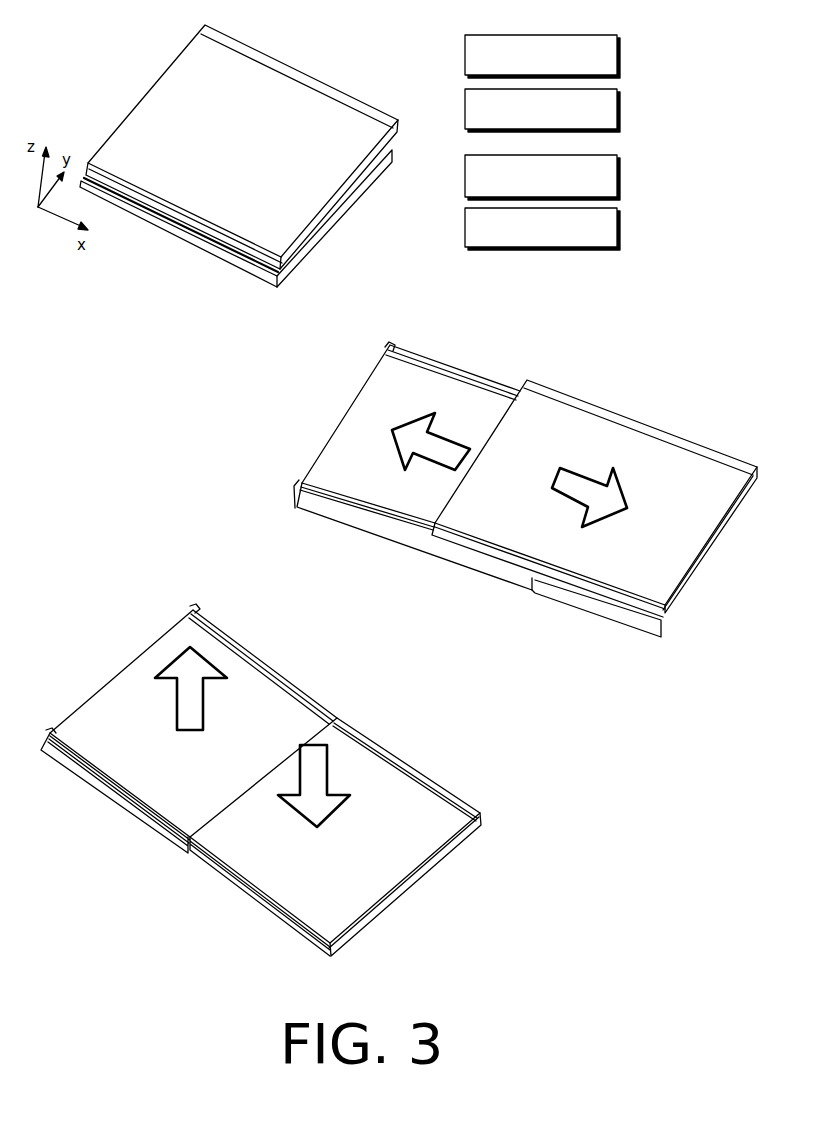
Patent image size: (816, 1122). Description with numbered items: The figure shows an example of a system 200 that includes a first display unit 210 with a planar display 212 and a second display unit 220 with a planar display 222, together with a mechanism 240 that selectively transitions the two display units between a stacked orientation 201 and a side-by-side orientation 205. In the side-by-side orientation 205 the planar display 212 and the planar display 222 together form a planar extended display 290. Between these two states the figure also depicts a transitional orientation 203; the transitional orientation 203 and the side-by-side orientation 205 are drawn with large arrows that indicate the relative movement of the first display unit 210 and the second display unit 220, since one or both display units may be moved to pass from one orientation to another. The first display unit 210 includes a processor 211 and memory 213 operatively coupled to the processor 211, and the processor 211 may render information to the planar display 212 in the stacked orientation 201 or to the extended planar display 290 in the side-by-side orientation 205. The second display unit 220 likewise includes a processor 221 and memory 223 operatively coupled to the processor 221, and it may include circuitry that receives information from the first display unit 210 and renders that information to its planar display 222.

The system 200 is at (121, 44).
The stacked orientation 201 is at (340, 33).
The transitional orientation 203 is at (612, 368).
The side-by-side orientation 205 is at (112, 611).
The first display unit 210 is at (421, 490).
The processor 211 is at (603, 65).
The planar display 212 is at (263, 145).
The memory 213 is at (596, 119).
The second display unit 220 is at (372, 172).
The processor 221 is at (603, 186).
The planar display 222 is at (408, 405).
The memory 223 is at (596, 237).
The mechanism 240 is at (152, 261).
The planar extended display 290 is at (103, 696).